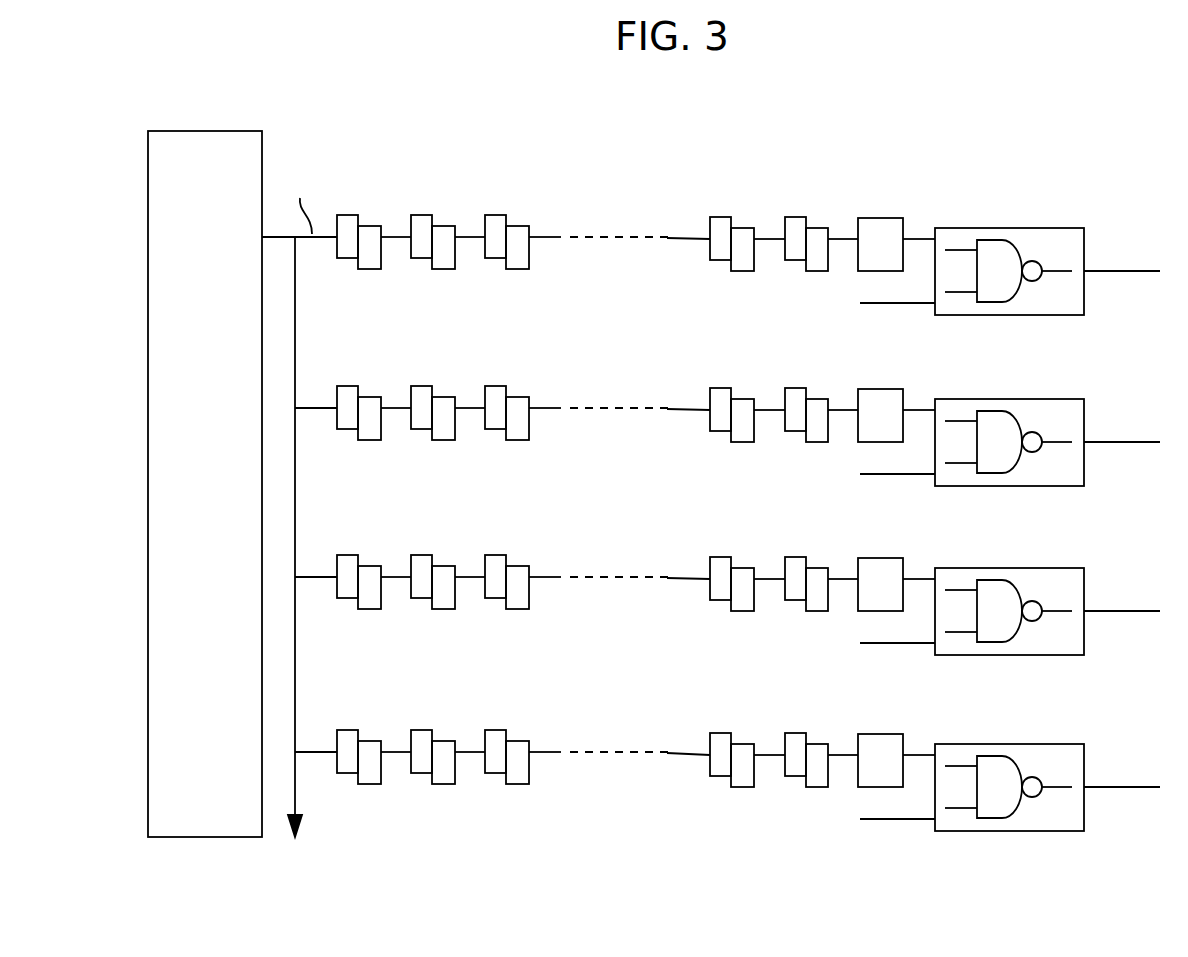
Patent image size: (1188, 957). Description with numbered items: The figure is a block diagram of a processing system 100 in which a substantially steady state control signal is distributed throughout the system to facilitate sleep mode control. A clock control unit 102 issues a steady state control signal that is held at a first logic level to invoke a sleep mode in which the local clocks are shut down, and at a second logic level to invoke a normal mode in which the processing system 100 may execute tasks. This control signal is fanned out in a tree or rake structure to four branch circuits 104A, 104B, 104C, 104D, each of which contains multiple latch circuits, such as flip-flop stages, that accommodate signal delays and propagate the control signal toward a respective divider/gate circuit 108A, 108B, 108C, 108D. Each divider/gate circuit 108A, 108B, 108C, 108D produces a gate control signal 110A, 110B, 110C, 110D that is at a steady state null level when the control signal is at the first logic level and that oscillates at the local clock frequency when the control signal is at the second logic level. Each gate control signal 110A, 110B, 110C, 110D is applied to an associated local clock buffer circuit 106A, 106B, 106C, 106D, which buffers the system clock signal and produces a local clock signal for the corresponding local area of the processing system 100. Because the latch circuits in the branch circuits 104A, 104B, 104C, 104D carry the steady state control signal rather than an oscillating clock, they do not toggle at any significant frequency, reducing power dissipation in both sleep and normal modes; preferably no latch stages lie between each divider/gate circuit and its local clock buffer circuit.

The processing system 100 is at (692, 95).
The clock control unit 102 is at (258, 484).
The branch circuit 104A is at (590, 225).
The branch circuit 104B is at (590, 396).
The branch circuit 104C is at (590, 565).
The branch circuit 104D is at (590, 740).
The local clock buffer circuit 106A is at (962, 256).
The local clock buffer circuit 106B is at (962, 427).
The local clock buffer circuit 106C is at (962, 596).
The local clock buffer circuit 106D is at (963, 772).
The divider/gate circuit 108A is at (866, 218).
The divider/gate circuit 108B is at (866, 389).
The divider/gate circuit 108C is at (866, 558).
The divider/gate circuit 108D is at (866, 734).
The gate control signal 110A is at (915, 233).
The gate control signal 110B is at (915, 404).
The gate control signal 110C is at (915, 573).
The gate control signal 110D is at (915, 749).